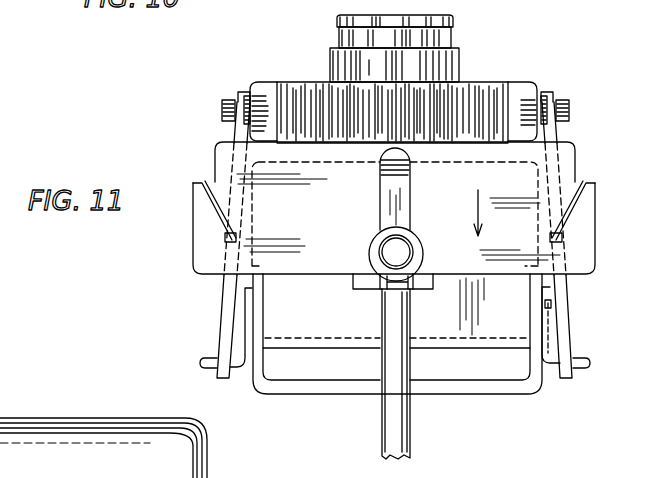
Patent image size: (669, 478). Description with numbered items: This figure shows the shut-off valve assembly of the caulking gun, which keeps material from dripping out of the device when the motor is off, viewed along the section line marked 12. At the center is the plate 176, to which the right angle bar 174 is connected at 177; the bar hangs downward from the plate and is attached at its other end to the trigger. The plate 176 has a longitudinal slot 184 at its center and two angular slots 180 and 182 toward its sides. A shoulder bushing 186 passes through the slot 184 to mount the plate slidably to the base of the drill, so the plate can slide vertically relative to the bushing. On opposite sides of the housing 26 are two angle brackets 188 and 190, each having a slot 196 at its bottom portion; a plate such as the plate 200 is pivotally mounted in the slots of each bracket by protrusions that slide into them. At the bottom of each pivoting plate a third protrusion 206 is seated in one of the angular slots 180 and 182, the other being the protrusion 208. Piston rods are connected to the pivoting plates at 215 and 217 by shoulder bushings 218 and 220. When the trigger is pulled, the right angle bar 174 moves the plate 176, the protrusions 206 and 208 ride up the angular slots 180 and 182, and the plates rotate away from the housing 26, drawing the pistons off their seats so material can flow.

The section line 12- 12 is at (209, 65).
The housing 26 is at (302, 345).
The right angle bar 174 is at (384, 427).
The plate 176 is at (513, 178).
The connection point of right angle bar to plate 177 is at (376, 278).
The angular slot 180 is at (571, 206).
The angular slot 182 is at (208, 184).
The longitudinal slot 184 is at (396, 188).
The shoulder bushing 186 is at (398, 254).
The angle bracket 188 is at (550, 305).
The angle bracket 190 is at (247, 303).
The slot 196 is at (226, 372).
The plate 200 is at (222, 333).
The third protrusion 206 is at (564, 237).
The protrusion 208 is at (228, 237).
The connection point of piston rod to plate 215 is at (539, 77).
The connection point of piston rod to plate 217 is at (266, 75).
The shoulder bushing 218 is at (560, 93).
The shoulder bushing 220 is at (226, 100).